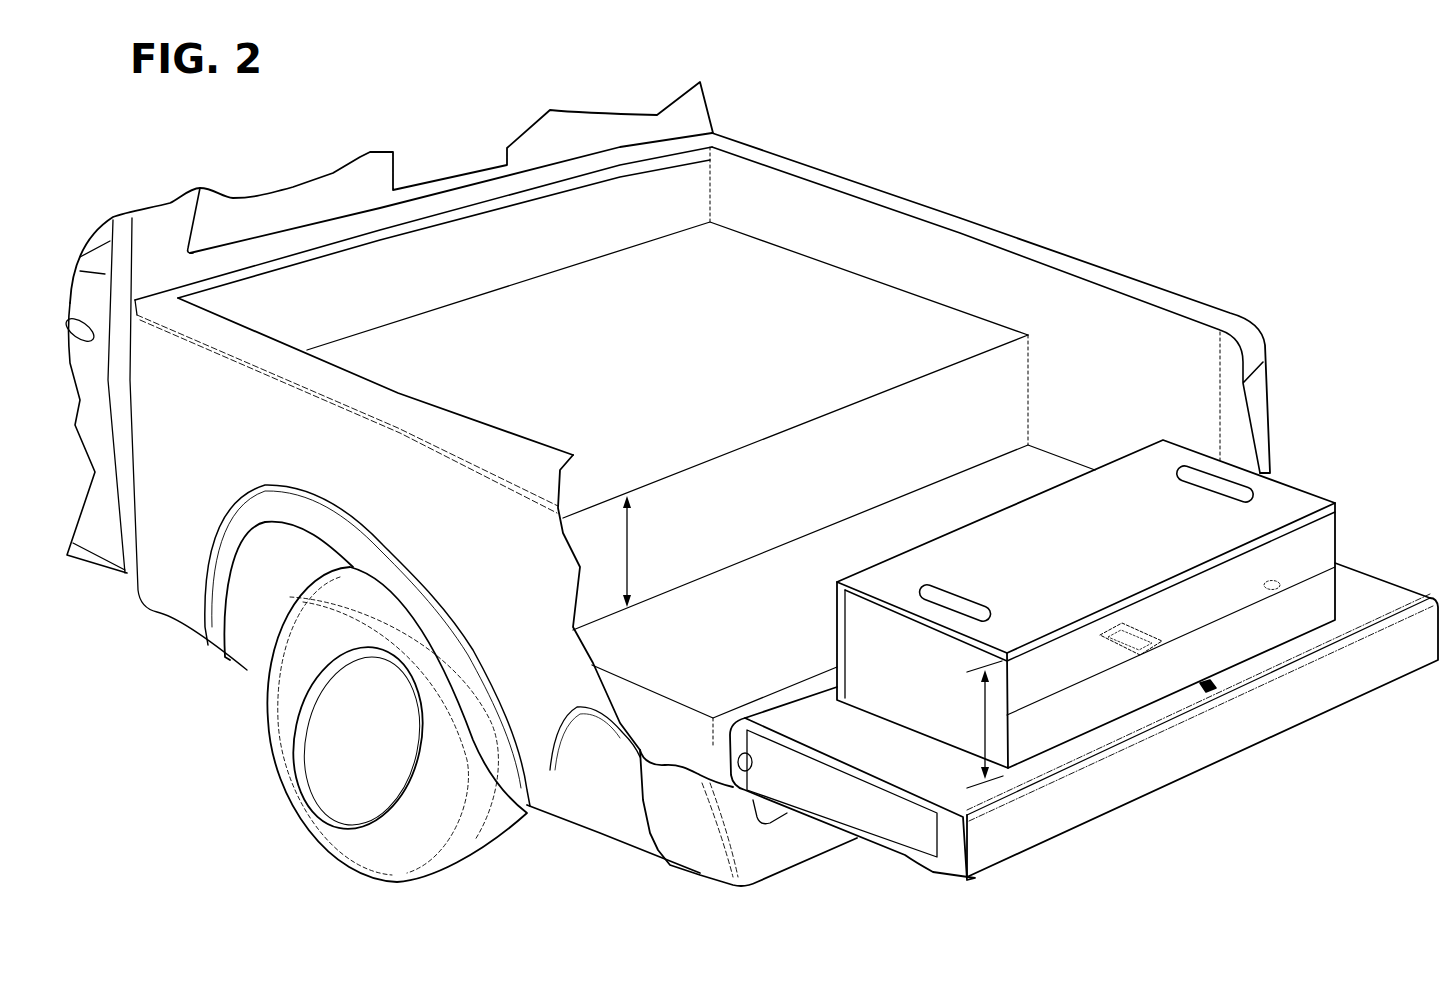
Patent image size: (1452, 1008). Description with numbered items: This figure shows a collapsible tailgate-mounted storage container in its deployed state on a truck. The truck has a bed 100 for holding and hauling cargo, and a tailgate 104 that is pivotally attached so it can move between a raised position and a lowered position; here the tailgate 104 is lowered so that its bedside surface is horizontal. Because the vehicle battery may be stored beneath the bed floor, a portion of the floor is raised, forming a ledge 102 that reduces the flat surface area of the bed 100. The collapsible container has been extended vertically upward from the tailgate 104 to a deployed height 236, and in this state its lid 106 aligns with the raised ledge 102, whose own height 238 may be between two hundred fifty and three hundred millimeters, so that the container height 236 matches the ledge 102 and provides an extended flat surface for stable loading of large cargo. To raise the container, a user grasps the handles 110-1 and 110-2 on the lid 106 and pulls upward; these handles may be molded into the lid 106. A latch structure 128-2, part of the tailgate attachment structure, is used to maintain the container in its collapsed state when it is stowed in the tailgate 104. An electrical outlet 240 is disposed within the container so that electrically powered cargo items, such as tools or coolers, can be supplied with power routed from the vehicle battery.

The bed 100 is at (518, 80).
The ledge 102 is at (528, 313).
The tailgate 104 is at (1157, 793).
The lid 106 is at (1070, 722).
The handle 110-1 is at (900, 588).
The handle 110-2 is at (1197, 483).
The latch structure 128-2 is at (1208, 686).
The height 236 is at (977, 737).
The height 238 is at (627, 553).
The electrical outlet 240 is at (1160, 647).